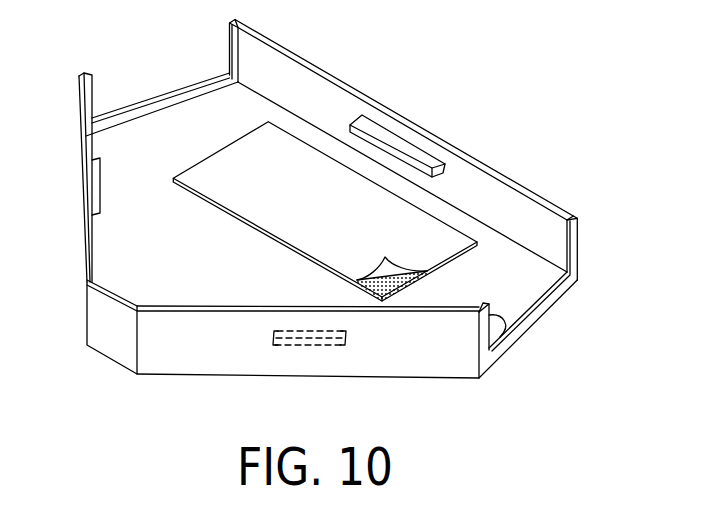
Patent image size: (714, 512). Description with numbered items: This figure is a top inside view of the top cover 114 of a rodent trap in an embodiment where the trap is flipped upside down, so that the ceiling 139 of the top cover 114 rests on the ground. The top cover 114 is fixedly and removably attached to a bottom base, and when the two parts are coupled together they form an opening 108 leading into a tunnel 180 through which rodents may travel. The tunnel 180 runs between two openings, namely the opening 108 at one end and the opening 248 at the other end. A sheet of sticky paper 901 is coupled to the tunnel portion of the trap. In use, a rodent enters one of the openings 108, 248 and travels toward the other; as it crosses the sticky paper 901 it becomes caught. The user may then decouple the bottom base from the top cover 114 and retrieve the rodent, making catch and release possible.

The top cover 114 is at (530, 130).
The opening 108 is at (93, 92).
The tunnel 180 is at (212, 117).
The ceiling 139 is at (185, 386).
The opening 248 is at (492, 316).
The sticky paper 901 is at (407, 291).